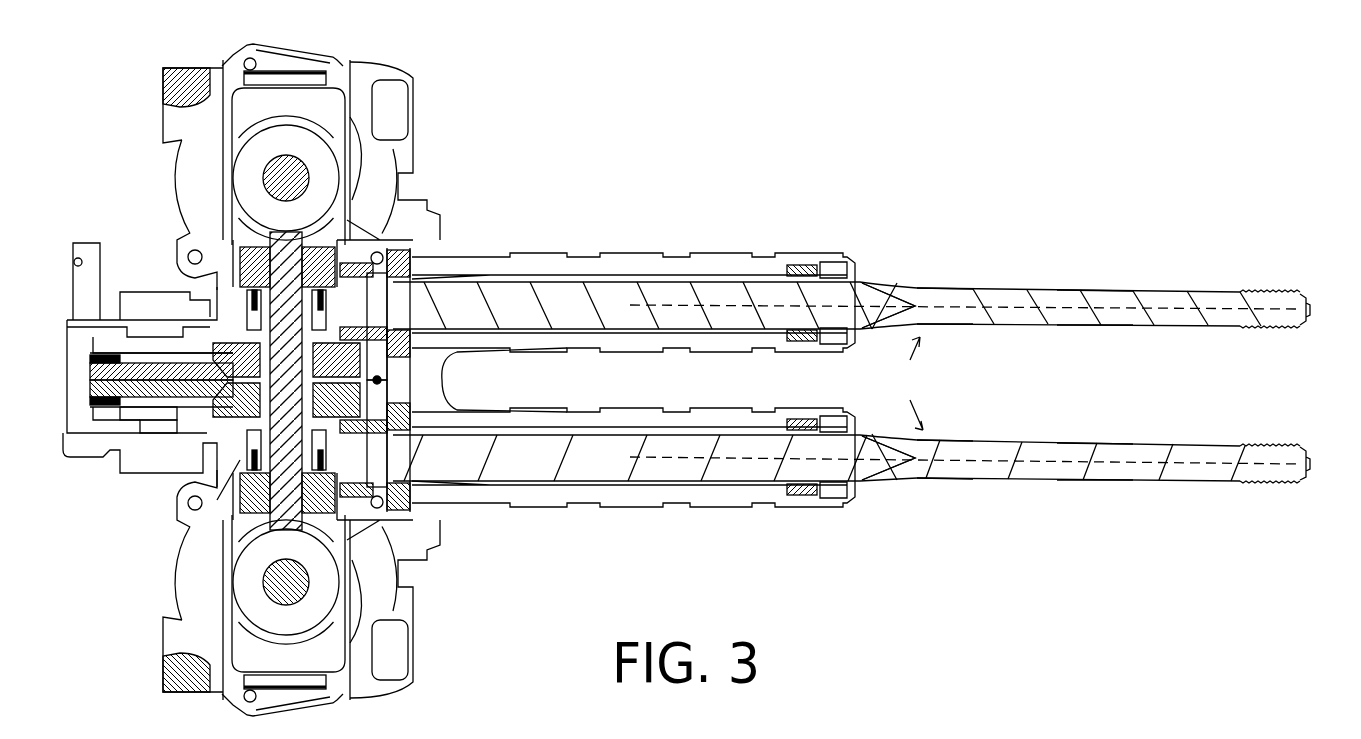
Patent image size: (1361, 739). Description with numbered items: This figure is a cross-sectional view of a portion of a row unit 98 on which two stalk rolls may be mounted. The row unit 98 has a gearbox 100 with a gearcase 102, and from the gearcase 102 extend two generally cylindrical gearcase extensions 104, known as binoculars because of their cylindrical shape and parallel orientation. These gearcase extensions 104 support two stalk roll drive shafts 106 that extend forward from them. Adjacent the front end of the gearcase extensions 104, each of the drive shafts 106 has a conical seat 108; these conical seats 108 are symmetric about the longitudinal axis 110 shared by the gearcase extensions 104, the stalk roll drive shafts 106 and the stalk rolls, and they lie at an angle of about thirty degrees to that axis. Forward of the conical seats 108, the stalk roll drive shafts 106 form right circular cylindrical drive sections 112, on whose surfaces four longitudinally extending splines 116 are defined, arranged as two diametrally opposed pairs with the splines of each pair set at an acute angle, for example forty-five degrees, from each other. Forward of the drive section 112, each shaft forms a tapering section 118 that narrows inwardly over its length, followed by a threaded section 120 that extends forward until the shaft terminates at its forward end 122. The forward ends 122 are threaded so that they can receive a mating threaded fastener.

The row unit 98 is at (634, 136).
The gearbox 100 is at (417, 145).
The gearcase 102 is at (395, 69).
The gearcase extensions 104 is at (585, 250).
The stalk roll drive shafts 106 is at (1019, 241).
The conical seats 108 is at (897, 282).
The longitudinal axis 110 is at (1108, 307).
The drive sections 112 is at (929, 238).
The splines 116 is at (963, 312).
The tapering section 118 is at (1093, 238).
The threaded section 120 is at (1268, 253).
The forward ends 122 is at (1307, 307).